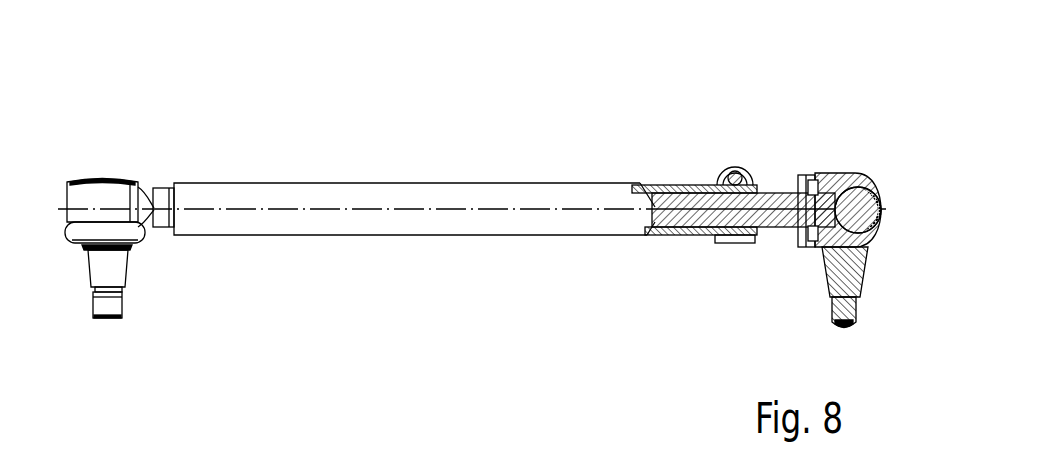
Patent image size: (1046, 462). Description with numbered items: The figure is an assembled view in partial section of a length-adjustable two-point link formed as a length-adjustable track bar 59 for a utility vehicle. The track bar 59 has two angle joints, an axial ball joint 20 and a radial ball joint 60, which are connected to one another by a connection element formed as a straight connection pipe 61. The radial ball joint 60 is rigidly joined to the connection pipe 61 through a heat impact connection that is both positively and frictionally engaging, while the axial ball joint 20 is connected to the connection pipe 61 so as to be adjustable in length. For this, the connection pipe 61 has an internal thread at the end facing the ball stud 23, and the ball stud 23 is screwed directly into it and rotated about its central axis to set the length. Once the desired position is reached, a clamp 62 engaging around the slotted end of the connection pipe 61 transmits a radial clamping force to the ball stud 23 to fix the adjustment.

The axial ball joint 20 is at (850, 168).
The ball stud 23 is at (668, 200).
The length-adjustable track bar 59 is at (357, 155).
The radial ball joint 60 is at (118, 167).
The connection pipe 61 is at (445, 243).
The clamp 62 is at (720, 158).